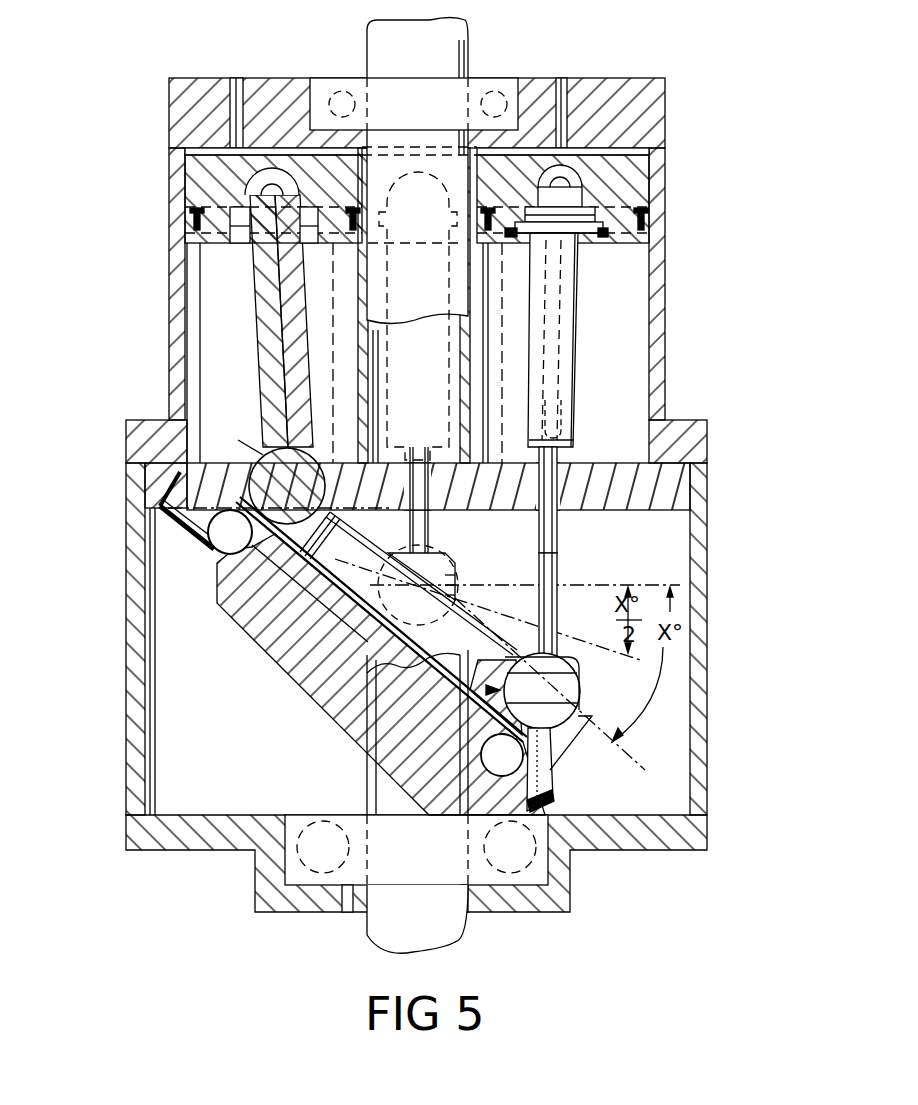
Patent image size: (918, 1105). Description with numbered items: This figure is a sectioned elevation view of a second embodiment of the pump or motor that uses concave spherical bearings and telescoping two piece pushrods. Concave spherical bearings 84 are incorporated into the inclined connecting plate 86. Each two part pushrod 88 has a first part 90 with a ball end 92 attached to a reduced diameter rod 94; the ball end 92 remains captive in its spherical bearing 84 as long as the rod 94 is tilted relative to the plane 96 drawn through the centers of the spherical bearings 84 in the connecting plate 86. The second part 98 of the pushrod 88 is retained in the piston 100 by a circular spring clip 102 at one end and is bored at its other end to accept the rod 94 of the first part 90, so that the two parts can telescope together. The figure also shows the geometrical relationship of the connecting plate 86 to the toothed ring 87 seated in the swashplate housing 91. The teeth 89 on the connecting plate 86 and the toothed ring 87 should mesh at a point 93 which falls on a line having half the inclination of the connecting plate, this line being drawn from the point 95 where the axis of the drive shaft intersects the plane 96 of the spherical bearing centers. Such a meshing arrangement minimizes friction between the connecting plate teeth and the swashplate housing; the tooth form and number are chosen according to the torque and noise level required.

The concave spherical bearing 84 is at (468, 692).
The connecting plate 86 is at (538, 767).
The toothed ring 87 is at (620, 490).
The two part pushrod 88 is at (594, 410).
The teeth 89 is at (580, 825).
The first part of the pushrod 90 is at (572, 528).
The swashplate housing 91 is at (135, 717).
The ball end 92 is at (562, 688).
The meshing point 93 is at (175, 493).
The reduced diameter rod 94 is at (545, 553).
The intersection point 95 is at (418, 585).
The plane through the spherical bearing centers 96 is at (660, 775).
The second part of the pushrod 98 is at (555, 343).
The piston 100 is at (623, 198).
The circular spring clip 102 is at (597, 245).